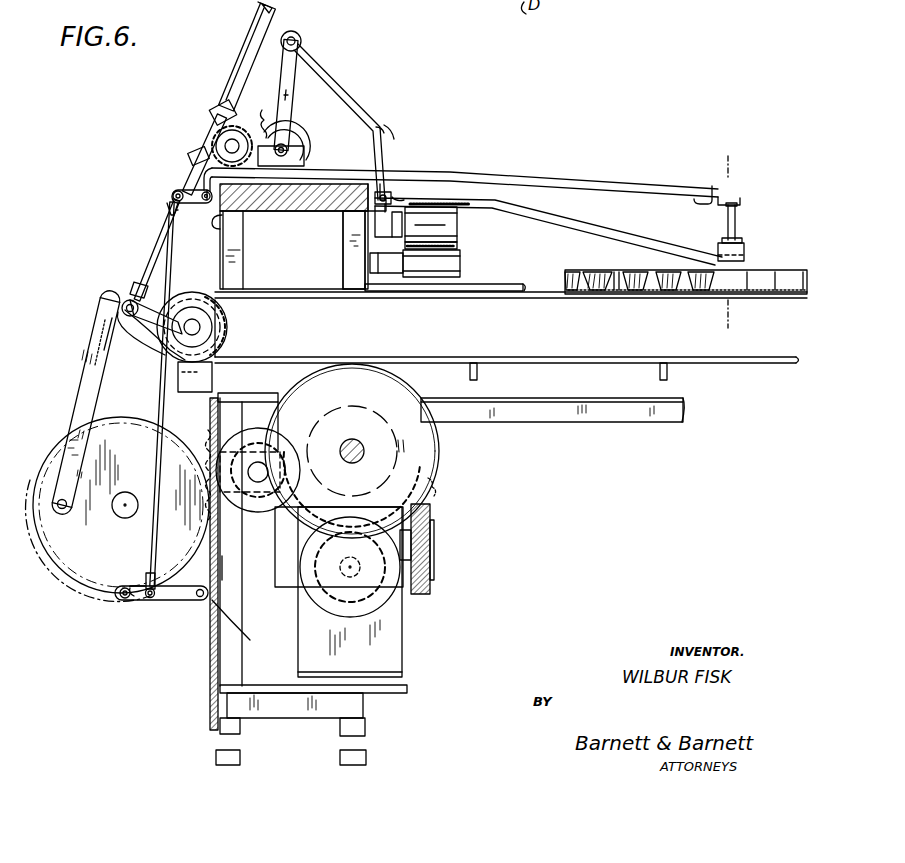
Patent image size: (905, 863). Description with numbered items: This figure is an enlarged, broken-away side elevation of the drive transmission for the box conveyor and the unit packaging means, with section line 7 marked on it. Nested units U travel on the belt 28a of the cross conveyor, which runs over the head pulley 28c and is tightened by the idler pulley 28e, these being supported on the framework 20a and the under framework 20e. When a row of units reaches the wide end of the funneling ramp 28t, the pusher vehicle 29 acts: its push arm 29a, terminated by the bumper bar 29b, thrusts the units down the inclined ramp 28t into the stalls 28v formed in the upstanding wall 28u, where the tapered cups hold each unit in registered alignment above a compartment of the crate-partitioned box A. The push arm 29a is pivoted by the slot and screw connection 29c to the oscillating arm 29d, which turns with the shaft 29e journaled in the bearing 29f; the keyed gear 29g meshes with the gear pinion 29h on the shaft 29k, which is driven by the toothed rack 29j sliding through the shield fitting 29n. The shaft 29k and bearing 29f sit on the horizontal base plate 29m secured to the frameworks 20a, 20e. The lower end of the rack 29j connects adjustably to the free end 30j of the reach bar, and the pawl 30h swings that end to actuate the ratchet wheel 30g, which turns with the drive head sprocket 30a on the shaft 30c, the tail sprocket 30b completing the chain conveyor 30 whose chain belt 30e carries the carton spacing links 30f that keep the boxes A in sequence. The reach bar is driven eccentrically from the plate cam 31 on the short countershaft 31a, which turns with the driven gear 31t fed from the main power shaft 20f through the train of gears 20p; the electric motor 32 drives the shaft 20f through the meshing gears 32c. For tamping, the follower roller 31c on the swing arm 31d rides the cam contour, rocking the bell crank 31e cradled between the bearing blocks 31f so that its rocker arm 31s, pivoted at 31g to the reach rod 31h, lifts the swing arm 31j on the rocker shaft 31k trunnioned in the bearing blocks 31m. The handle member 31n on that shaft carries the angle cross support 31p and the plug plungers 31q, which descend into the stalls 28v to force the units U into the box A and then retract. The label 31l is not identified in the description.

The guiding scabbard or shield fitting 29n is at (240, 72).
The shaft 29k is at (215, 135).
The gear pinion 29h is at (225, 146).
The gear 29g is at (260, 114).
The slot and screw connection 29c is at (300, 42).
The oscillating arm 29d is at (292, 86).
The pusher vehicle 29 is at (378, 112).
The bearing 29f is at (296, 138).
The shaft 29e is at (305, 160).
The push arm 29a is at (388, 192).
The bumper bar 29b is at (400, 196).
The elongated handle member 31n is at (612, 178).
The angle cross support 31p is at (710, 192).
The plug plungers 31q is at (740, 222).
The upstanding wall 28u is at (745, 252).
The stalls 28v is at (716, 244).
The section line 7 is at (730, 166).
The funneling ramp 28t is at (585, 232).
The head pulley 28c is at (458, 229).
The belt 28a is at (458, 246).
The belt tightener idler pulley 28e is at (462, 264).
The bearing blocks 31m is at (245, 222).
The horizontal base plate 29m is at (338, 212).
The framework 20a is at (244, 253).
The under framework 20e is at (345, 270).
The chain conveyor 30 is at (264, 302).
The carton spacing link 30f is at (616, 300).
The unit U is at (625, 266).
The box A is at (580, 300).
The chain belt 30e is at (432, 6).
The ratchet wheel 30g is at (200, 290).
The drive head sprocket 30a is at (222, 338).
The toothed rack 29j is at (160, 238).
The free end of reach bar 30j is at (124, 300).
The shaft 30c is at (170, 352).
The crank arm 31l is at (42, 462).
The pawl 30h is at (98, 370).
The tail sprocket 30b is at (104, 348).
The rocker shaft 31k is at (172, 194).
The swing arm 31j is at (178, 182).
The driven gear 31t is at (202, 434).
The plate cam 31 is at (100, 582).
The short countershaft 31a is at (112, 510).
The reach rod 31h is at (160, 488).
The bell crank 31e is at (176, 602).
The follower roller 31c is at (118, 600).
The rocker arm 31s is at (160, 598).
The swing arm 31d is at (136, 586).
The pivot connection 31g is at (138, 604).
The main power shaft 20f is at (365, 451).
The meshing gears 32c is at (434, 490).
The train of gears 20p is at (262, 530).
The electric motor 32 is at (395, 627).
The bearing blocks 31f is at (242, 626).